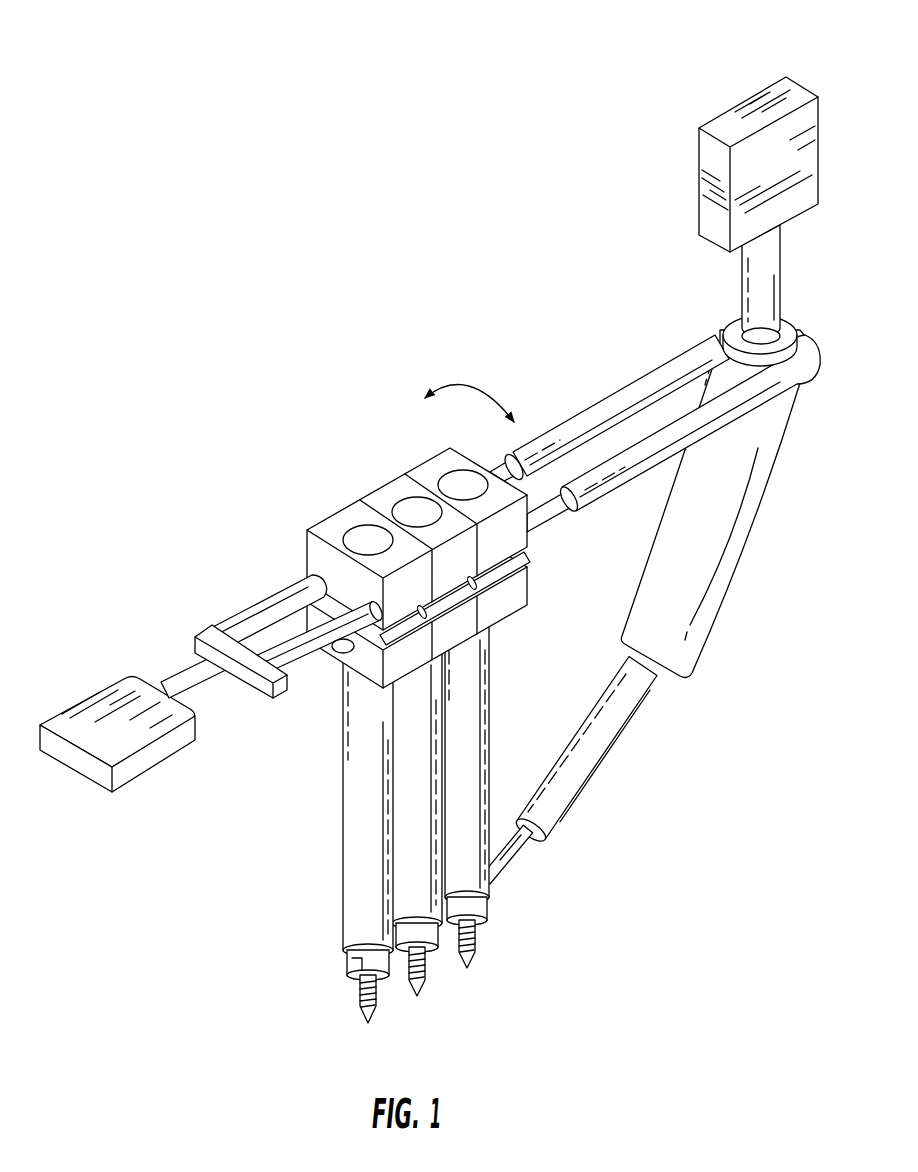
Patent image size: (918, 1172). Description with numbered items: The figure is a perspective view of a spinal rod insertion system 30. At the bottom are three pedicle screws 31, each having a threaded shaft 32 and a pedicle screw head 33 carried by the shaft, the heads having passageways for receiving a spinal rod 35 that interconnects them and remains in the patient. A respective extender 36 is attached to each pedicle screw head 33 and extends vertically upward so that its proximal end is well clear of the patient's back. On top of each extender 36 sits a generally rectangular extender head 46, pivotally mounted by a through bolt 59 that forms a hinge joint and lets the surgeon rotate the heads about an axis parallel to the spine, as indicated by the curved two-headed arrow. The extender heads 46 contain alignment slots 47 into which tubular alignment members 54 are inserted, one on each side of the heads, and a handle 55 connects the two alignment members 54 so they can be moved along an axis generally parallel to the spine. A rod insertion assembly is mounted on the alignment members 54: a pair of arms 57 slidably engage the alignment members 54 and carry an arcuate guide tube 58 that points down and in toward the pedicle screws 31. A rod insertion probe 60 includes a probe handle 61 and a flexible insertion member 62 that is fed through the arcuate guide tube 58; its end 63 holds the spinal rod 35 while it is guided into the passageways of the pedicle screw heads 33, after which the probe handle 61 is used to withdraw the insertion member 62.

The spinal rod insertion system 30 is at (258, 290).
The pedicle screw 31 is at (441, 993).
The threaded shaft 32 is at (354, 1001).
The pedicle screw head 33 is at (344, 954).
The spinal rod 35 is at (504, 873).
The extender 36 is at (326, 851).
The extender head 46 is at (377, 490).
The alignment slot 47 is at (529, 575).
The alignment member 54 is at (252, 600).
The handle 55 is at (98, 700).
The arm 57 is at (672, 362).
The arcuate guide tube 58 is at (773, 498).
The through bolt 59 is at (335, 662).
The rod insertion probe 60 is at (832, 96).
The probe handle 61 is at (700, 135).
The insertion member 62 is at (604, 773).
The end 63 is at (535, 838).